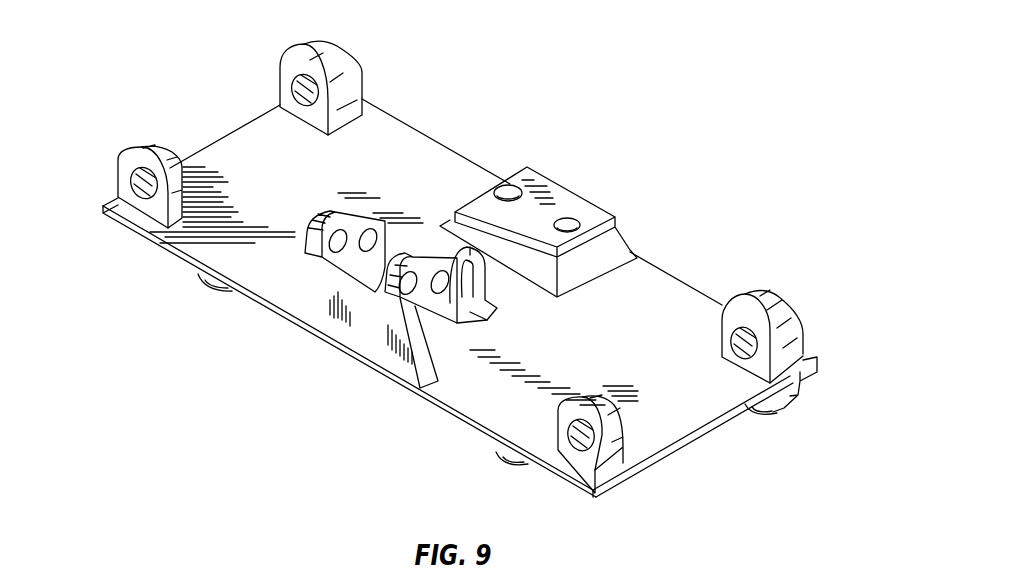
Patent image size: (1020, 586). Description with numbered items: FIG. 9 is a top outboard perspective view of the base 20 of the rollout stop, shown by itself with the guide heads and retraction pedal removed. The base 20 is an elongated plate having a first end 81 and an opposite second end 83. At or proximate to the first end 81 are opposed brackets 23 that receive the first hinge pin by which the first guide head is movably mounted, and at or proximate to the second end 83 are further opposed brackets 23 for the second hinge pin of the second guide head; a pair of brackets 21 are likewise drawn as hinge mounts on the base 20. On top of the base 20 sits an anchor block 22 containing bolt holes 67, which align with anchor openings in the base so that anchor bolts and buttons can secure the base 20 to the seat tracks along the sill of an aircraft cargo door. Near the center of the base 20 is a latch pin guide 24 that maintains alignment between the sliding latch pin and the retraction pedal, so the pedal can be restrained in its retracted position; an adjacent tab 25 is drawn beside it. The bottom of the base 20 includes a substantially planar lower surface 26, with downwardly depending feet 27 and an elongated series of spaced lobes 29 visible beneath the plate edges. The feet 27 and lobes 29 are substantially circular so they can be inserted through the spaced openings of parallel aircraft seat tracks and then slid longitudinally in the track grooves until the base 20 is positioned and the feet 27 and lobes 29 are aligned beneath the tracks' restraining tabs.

The base 20 is at (628, 108).
The first mounting lugs 21 is at (307, 45).
The anchor block 22 is at (561, 195).
The opposed brackets 23 is at (785, 302).
The latch pin guide 24 is at (478, 292).
The hinge tab 25 is at (372, 333).
The lower surface 26 is at (627, 359).
The feet 27 is at (212, 287).
The spaced lobes 29 is at (786, 412).
The bolt holes 67 is at (566, 215).
The first end 81 is at (222, 137).
The second end 83 is at (703, 437).